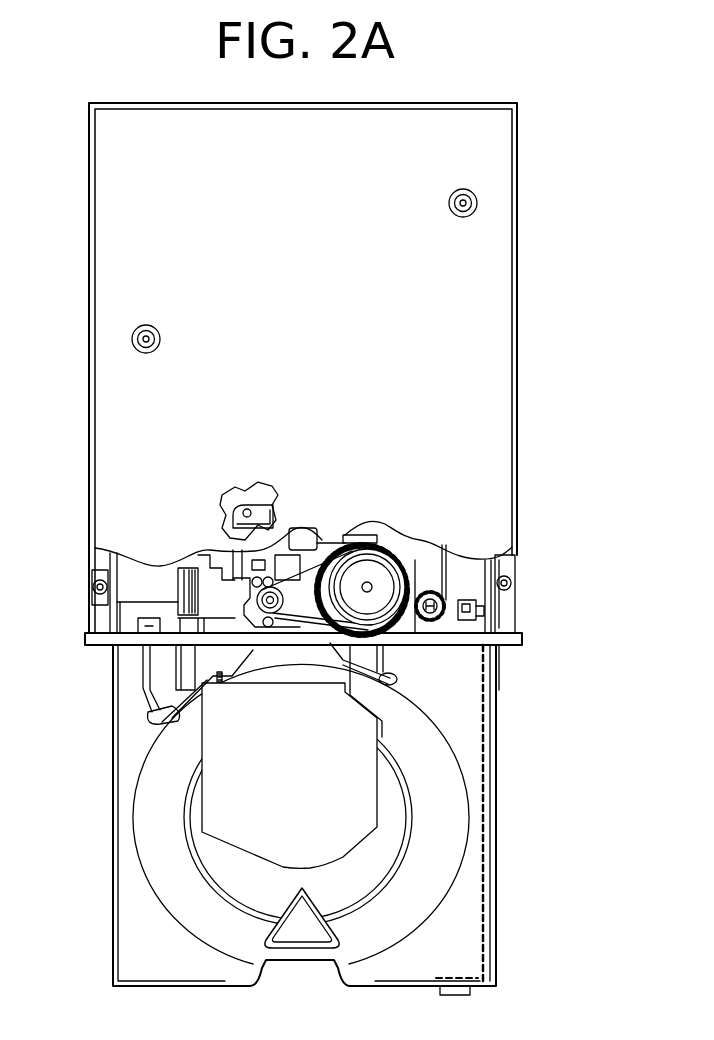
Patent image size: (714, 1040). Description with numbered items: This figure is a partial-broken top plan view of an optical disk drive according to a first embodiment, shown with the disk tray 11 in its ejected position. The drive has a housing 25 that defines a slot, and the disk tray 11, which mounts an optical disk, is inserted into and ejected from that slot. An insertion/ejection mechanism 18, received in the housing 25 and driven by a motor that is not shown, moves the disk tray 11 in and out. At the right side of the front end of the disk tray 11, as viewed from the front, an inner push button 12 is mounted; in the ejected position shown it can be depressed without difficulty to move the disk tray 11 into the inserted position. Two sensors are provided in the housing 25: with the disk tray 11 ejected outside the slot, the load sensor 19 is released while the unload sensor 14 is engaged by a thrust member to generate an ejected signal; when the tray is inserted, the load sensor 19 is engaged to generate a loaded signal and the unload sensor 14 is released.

The housing 25 is at (517, 283).
The load sensor 19 is at (226, 497).
The insertion/ejection mechanism 18 is at (380, 572).
The unload sensor 14 is at (484, 612).
The disk tray 11 is at (158, 839).
The inner push button 12 is at (455, 996).